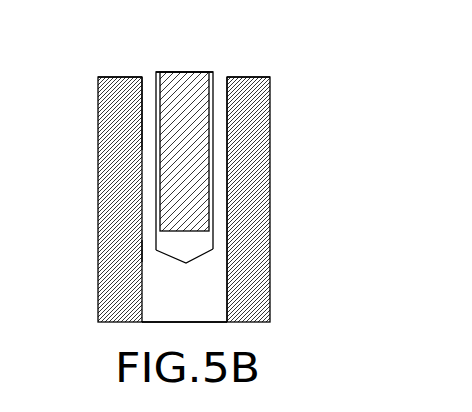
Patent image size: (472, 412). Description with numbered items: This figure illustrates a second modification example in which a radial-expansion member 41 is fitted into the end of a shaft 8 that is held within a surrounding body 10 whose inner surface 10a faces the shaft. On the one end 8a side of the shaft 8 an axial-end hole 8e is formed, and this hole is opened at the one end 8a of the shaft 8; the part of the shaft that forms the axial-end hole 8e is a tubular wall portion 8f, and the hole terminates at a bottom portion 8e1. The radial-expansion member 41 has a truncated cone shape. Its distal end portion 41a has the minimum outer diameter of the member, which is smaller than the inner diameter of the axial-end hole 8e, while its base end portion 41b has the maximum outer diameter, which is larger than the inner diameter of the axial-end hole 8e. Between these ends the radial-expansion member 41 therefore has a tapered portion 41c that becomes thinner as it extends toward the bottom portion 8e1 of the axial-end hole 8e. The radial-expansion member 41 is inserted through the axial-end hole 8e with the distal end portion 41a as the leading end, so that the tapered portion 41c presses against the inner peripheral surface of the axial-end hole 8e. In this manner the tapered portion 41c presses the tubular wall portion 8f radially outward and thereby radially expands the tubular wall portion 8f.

The housing 10 is at (98, 185).
The inner surface of housing 10a is at (220, 278).
The shaft 8 is at (172, 283).
The axial-end hole 8e is at (210, 102).
The bottom portion of the axial-end hole 8e1 is at (172, 255).
The tubular wall portion 8f is at (145, 100).
The one end of the shaft 8a is at (216, 77).
The radial-expansion member 41 is at (214, 191).
The distal end portion 41a is at (184, 240).
The base end portion 41b is at (163, 72).
The tapered portion 41c is at (216, 217).